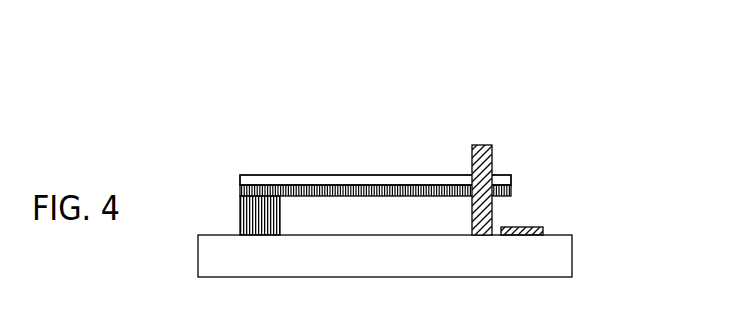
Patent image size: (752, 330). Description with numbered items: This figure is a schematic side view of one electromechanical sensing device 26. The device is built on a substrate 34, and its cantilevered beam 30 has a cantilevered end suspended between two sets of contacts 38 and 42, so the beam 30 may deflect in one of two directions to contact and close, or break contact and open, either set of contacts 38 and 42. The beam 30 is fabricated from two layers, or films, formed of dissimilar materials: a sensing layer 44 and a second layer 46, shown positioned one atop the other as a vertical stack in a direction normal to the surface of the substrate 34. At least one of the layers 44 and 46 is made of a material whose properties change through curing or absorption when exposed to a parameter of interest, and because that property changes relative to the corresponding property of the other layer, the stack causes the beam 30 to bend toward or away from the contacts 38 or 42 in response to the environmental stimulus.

The sensing device 26 is at (290, 76).
The cantilevered beam 30 is at (282, 156).
The substrate 34 is at (560, 260).
The contacts 38 is at (537, 223).
The contacts 42 is at (482, 145).
The sensing layer 44 is at (340, 175).
The second layer 46 is at (385, 185).